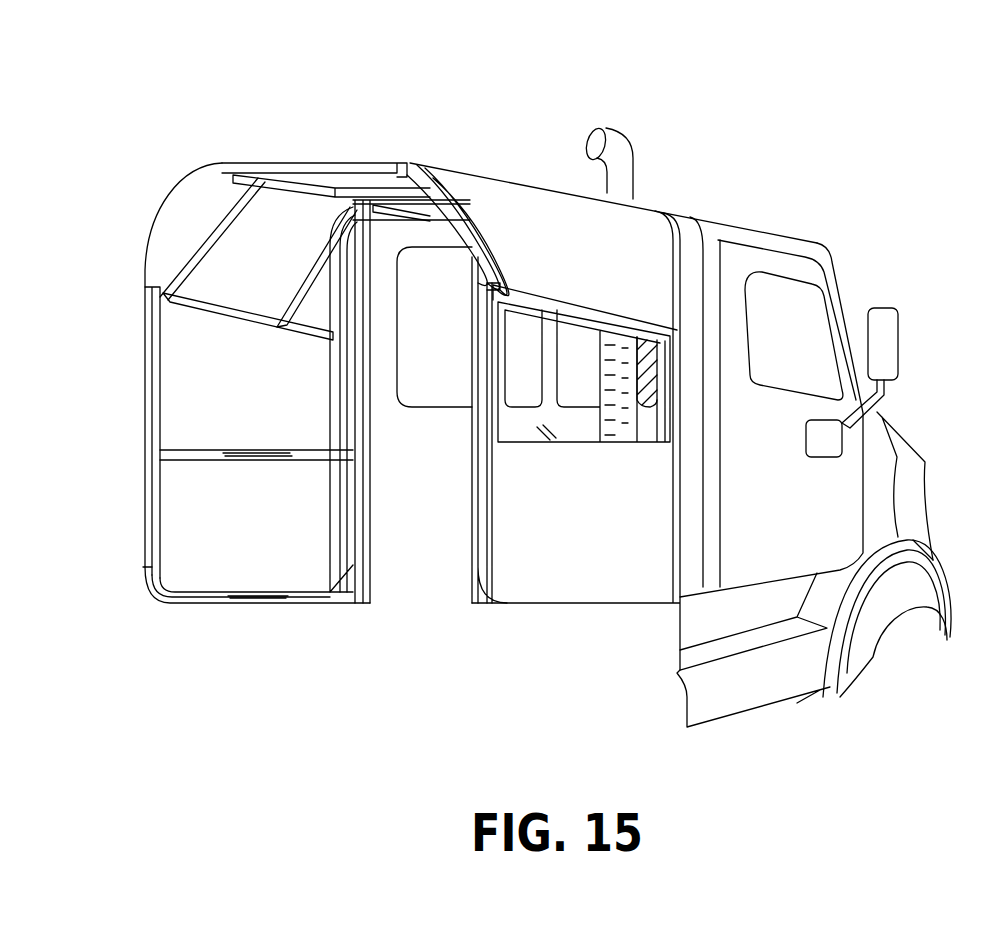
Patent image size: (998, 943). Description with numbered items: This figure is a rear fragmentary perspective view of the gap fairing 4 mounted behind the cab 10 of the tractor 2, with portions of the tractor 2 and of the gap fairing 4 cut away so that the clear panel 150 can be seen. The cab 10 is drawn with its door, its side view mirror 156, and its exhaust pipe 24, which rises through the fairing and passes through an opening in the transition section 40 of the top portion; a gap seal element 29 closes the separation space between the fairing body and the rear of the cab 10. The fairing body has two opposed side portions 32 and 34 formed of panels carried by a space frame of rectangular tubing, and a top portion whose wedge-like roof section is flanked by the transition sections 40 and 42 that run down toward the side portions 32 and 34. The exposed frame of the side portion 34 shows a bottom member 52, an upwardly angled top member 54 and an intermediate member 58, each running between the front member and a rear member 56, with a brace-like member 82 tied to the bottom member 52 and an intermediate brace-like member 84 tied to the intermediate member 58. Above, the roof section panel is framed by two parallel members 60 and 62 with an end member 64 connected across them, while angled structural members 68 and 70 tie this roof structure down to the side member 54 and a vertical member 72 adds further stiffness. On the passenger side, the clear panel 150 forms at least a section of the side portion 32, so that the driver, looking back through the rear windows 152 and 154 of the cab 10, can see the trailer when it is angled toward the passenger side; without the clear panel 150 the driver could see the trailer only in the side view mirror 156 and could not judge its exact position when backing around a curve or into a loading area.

The tractor 2 is at (913, 278).
The gap fairing 4 is at (478, 118).
The cab 10 is at (835, 460).
The exhaust pipe 24 is at (618, 162).
The gap seal element 29 is at (680, 221).
The side portion 32 is at (607, 376).
The side portion 34 is at (248, 389).
The transition section 40 is at (565, 260).
The transition section 42 is at (152, 233).
The bottom member 52 is at (217, 607).
The top member 54 is at (228, 320).
The rear member 56 is at (152, 452).
The intermediate member 58 is at (200, 460).
The parallel member 60 is at (420, 168).
The parallel member 62 is at (298, 187).
The end member 64 is at (345, 163).
The angled structural member 68 is at (295, 297).
The angled structural member 70 is at (215, 238).
The vertical member 72 is at (367, 433).
The brace-like member 82 is at (317, 597).
The intermediate brace-like member 84 is at (313, 463).
The clear panel 150 is at (570, 428).
The rear window 152 is at (450, 400).
The rear window 154 is at (577, 360).
The side view mirror 156 is at (885, 325).